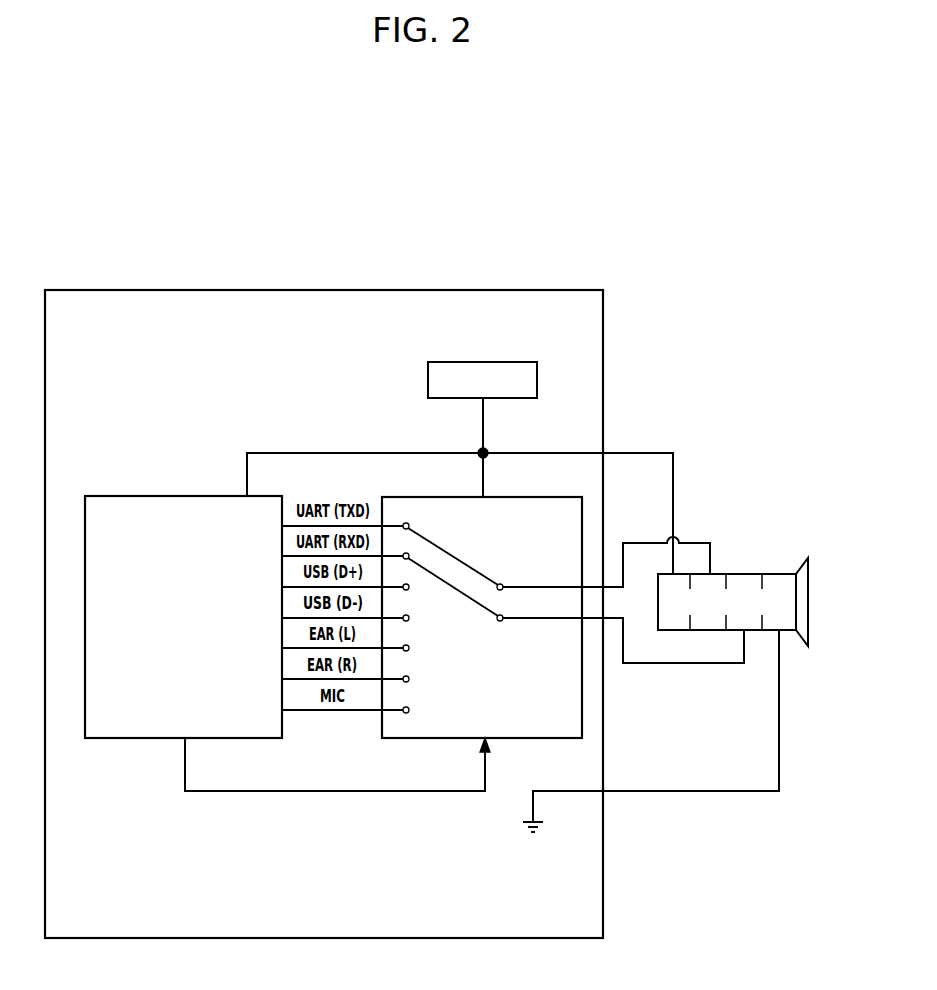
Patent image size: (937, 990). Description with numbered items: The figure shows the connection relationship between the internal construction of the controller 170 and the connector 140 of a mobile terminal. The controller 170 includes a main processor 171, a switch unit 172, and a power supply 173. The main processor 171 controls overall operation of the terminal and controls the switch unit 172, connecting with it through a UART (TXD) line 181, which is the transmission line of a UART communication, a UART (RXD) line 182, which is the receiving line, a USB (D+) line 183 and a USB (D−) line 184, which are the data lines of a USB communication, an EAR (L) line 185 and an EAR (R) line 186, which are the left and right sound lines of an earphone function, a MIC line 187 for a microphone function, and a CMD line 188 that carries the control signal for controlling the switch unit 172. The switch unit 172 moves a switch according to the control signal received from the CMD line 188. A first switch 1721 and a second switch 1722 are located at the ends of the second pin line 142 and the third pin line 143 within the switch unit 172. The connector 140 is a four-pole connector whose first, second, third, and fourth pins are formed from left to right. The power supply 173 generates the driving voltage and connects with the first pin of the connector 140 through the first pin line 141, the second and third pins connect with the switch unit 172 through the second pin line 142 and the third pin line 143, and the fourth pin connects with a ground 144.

The controller 170 is at (317, 290).
The main processor 171 is at (186, 496).
The switch unit 172 is at (491, 497).
The power supply 173 is at (484, 362).
The first switch 1721 is at (457, 553).
The second switch 1722 is at (450, 586).
The UART (TXD) line 181 is at (282, 526).
The UART (RXD) line 182 is at (282, 556).
The USB (D+) line 183 is at (282, 587).
The USB (D−) line 184 is at (282, 618).
The EAR (L) line 185 is at (282, 648).
The EAR (R) line 186 is at (282, 679).
The MIC line 187 is at (282, 710).
The CMD line 188 is at (245, 791).
The connector 140 is at (740, 574).
The first pin line 141 is at (652, 453).
The second pin line 142 is at (697, 543).
The third pin line 143 is at (683, 663).
The ground 144 is at (655, 791).